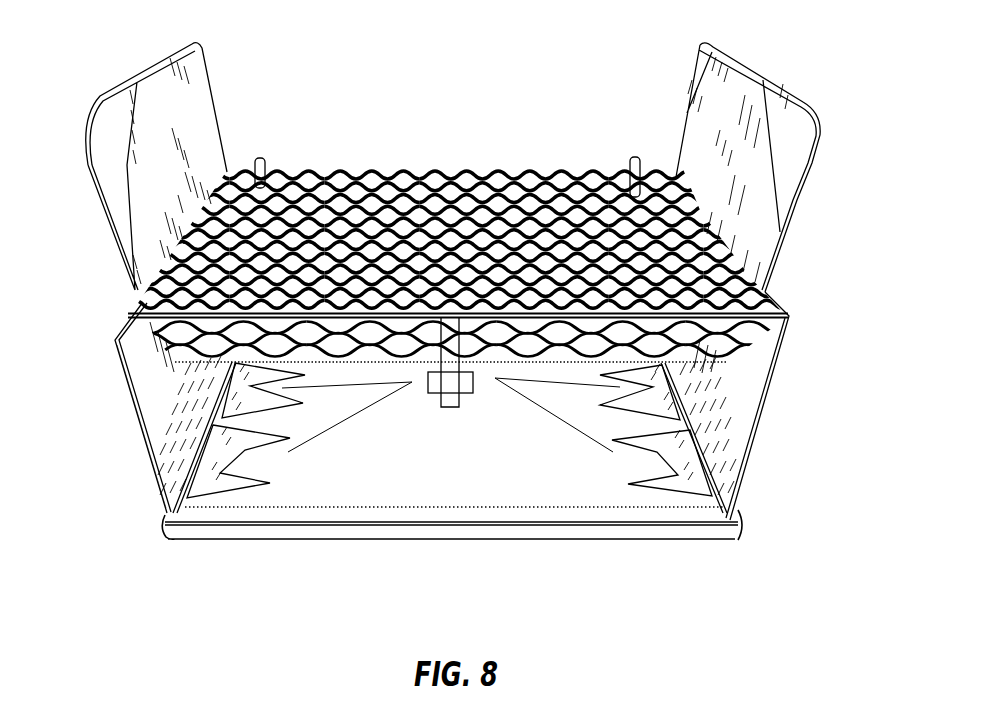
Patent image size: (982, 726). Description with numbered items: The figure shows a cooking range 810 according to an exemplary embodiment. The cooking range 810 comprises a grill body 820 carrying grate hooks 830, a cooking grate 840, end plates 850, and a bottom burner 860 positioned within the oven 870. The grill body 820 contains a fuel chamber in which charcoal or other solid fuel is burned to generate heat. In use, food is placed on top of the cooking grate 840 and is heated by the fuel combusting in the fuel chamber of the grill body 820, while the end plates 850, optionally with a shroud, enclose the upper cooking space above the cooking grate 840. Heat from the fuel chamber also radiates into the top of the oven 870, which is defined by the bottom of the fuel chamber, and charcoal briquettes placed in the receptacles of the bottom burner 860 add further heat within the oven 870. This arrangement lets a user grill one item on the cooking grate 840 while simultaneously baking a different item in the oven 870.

The cooking range 810 is at (490, 558).
The grill body 820 is at (740, 403).
The grate hooks 830 is at (262, 157).
The cooking grate 840 is at (433, 210).
The end plates 850 is at (695, 130).
The bottom burner 860 is at (347, 483).
The oven 870 is at (185, 412).